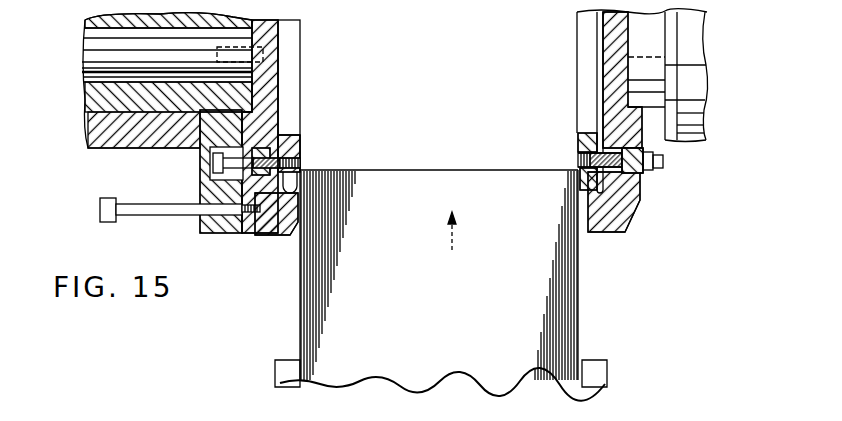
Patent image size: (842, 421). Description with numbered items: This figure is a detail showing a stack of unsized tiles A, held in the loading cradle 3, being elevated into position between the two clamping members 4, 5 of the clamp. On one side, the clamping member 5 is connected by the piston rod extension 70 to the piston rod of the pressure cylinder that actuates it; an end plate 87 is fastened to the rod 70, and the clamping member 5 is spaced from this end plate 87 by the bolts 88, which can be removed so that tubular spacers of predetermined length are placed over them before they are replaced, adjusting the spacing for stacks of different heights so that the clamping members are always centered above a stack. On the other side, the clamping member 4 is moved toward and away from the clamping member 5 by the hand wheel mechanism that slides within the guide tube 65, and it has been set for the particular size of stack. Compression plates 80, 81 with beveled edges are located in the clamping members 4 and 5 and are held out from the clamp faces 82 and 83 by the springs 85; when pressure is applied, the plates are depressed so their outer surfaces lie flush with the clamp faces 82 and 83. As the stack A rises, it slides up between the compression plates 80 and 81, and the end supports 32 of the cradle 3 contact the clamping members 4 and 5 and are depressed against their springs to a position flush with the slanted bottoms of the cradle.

The piston rod extension 70 is at (92, 57).
The end plate 87 is at (203, 188).
The bolts 88 is at (152, 218).
The compression plate 81 is at (300, 144).
The clamping member 5 is at (272, 241).
The clamp face 83 is at (300, 243).
The compression plate 80 is at (578, 143).
The springs 85 is at (618, 172).
The clamping member 4 is at (635, 209).
The guide tube 65 is at (706, 62).
The clamp face 82 is at (582, 240).
The stack of tiles A is at (580, 323).
The end supports 32 is at (288, 364).
The loading cradle 3 is at (616, 381).